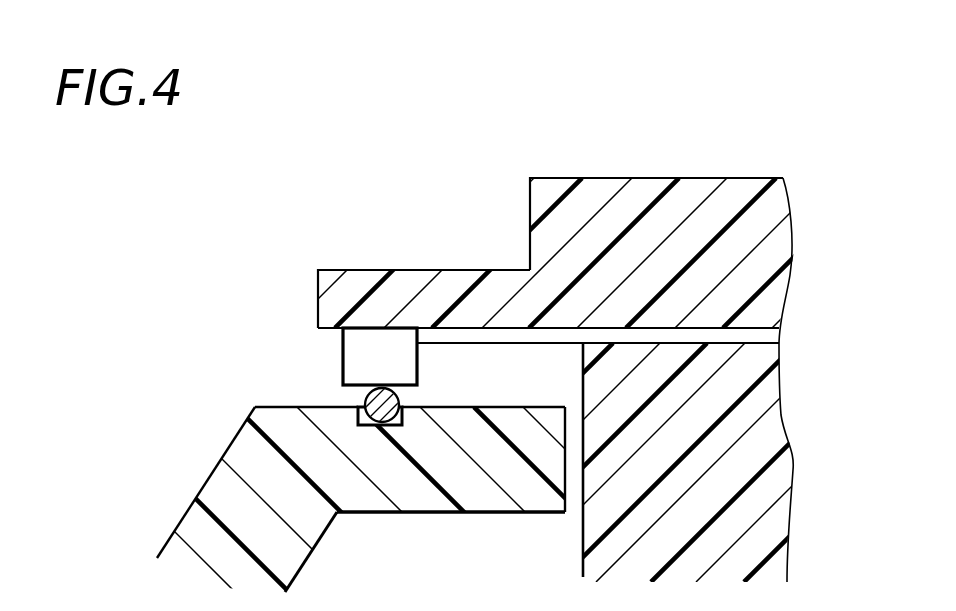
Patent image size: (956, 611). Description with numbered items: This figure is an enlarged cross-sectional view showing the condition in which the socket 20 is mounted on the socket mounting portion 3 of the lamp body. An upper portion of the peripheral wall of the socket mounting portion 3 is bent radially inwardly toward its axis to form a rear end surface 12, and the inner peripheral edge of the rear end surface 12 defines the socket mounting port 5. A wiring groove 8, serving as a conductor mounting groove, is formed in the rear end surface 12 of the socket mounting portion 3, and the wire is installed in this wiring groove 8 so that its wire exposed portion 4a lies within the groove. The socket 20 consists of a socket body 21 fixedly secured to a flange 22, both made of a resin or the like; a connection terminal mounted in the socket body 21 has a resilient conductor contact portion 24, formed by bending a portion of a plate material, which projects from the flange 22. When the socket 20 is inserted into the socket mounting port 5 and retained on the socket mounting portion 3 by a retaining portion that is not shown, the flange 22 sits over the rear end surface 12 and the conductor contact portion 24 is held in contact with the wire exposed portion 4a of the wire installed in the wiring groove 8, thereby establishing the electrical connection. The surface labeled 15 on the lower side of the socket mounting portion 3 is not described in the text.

The socket mounting portion 3 is at (383, 449).
The wire exposed portion 4a is at (400, 402).
The socket mounting port 5 is at (577, 417).
The wiring groove 8 is at (357, 426).
The rear end surface 12 is at (287, 407).
The bottom surface 15 is at (338, 522).
The socket 20 is at (470, 172).
The socket body 21 is at (763, 410).
The flange 22 is at (460, 270).
The conductor contact portion 24 is at (342, 348).